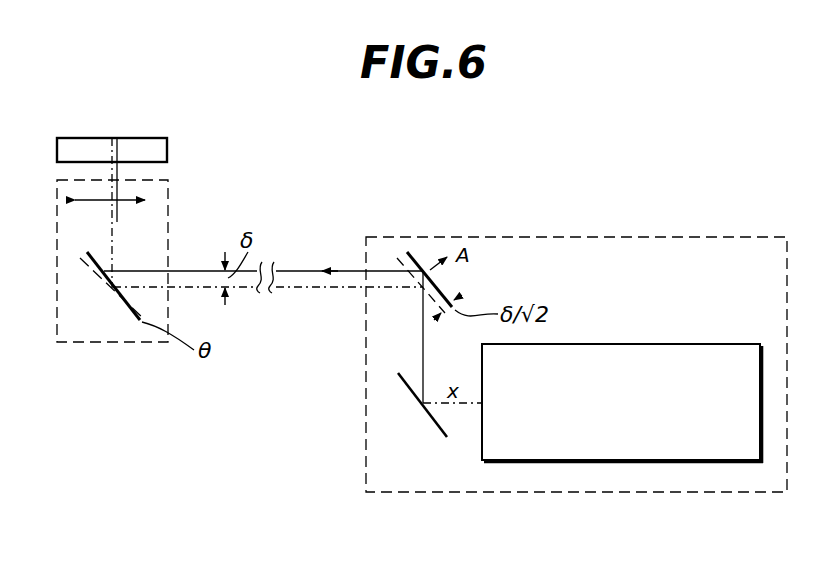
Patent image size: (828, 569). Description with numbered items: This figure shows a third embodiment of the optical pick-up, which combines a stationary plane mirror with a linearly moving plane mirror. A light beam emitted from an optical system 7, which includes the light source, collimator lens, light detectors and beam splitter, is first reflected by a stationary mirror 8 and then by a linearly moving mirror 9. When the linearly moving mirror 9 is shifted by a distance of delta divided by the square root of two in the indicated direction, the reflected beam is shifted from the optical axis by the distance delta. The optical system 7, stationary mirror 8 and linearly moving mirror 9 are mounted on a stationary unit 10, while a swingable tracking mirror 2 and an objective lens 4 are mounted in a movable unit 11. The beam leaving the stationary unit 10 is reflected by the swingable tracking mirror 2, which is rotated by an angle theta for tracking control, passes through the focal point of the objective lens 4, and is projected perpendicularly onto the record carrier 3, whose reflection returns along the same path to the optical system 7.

The swingable tracking mirror 2 is at (124, 311).
The optical information record carrier 3 is at (165, 150).
The objective lens 4 is at (142, 202).
The optical system 7 is at (605, 358).
The stationary mirror 8 is at (440, 436).
The linearly moving mirror 9 is at (448, 292).
The stationary unit 10 is at (595, 237).
The movable unit 11 is at (60, 342).